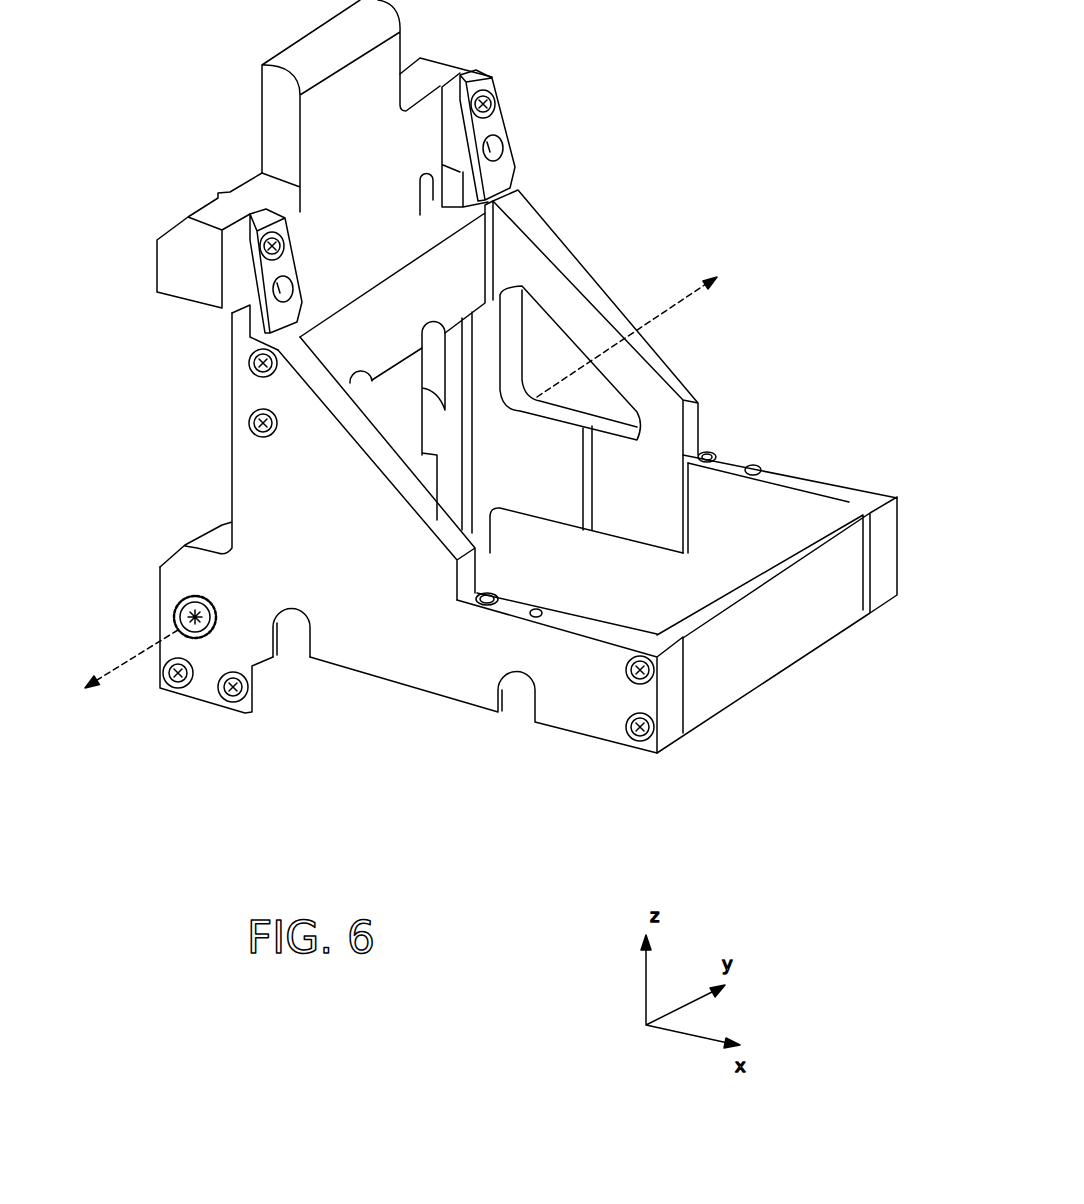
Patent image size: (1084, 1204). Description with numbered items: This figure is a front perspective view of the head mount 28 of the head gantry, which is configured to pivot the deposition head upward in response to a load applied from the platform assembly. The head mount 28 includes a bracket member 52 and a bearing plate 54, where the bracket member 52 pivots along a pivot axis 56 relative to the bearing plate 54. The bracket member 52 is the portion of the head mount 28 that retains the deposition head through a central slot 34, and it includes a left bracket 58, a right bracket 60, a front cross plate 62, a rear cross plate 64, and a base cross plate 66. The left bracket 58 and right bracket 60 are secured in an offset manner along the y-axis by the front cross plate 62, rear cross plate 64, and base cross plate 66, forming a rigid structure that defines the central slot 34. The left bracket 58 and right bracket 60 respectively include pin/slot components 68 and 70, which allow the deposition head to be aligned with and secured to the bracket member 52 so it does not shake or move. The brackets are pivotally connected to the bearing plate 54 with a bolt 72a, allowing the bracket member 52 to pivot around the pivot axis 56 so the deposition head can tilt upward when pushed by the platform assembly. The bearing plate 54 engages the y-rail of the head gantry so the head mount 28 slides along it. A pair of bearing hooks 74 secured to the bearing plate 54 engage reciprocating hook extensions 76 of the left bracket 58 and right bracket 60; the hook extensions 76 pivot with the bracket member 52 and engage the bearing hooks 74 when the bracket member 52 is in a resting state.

The head mount 28 is at (506, 418).
The central slot 34 is at (752, 498).
The bracket member 52 is at (515, 622).
The bearing plate 54 is at (275, 95).
The pivot axis 56 is at (703, 287).
The left bracket 58 is at (472, 687).
The right bracket 60 is at (668, 372).
The front cross plate 62 is at (780, 638).
The rear cross plate 64 is at (388, 295).
The base cross plate 66 is at (290, 668).
The pin/slot components 68 is at (537, 594).
The pin/slot components 70 is at (762, 453).
The bolt 72a is at (193, 598).
The bearing hooks 74 is at (517, 174).
The hook extensions 76 is at (452, 182).